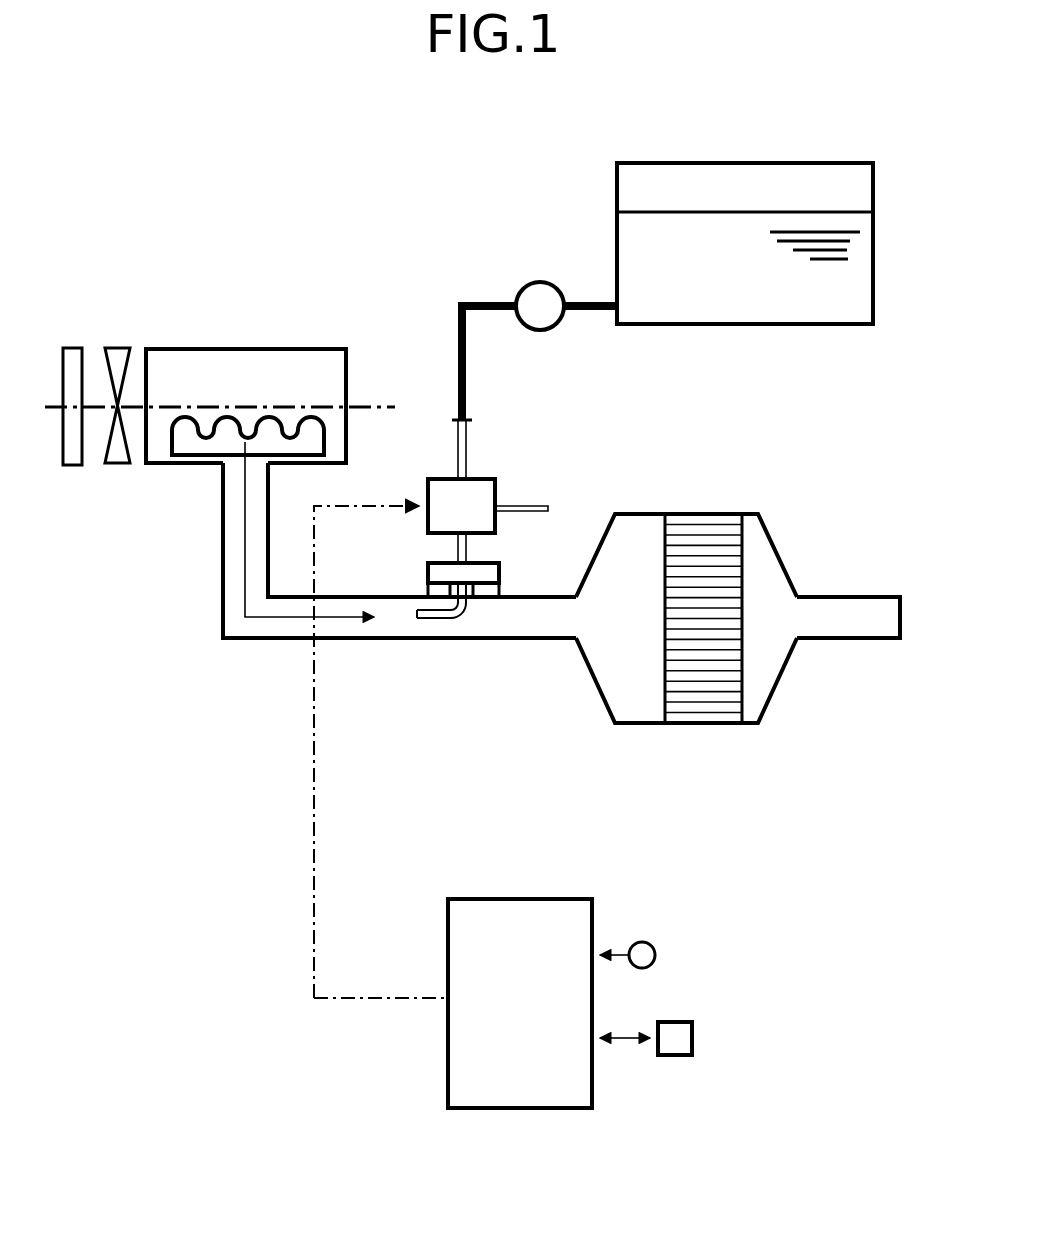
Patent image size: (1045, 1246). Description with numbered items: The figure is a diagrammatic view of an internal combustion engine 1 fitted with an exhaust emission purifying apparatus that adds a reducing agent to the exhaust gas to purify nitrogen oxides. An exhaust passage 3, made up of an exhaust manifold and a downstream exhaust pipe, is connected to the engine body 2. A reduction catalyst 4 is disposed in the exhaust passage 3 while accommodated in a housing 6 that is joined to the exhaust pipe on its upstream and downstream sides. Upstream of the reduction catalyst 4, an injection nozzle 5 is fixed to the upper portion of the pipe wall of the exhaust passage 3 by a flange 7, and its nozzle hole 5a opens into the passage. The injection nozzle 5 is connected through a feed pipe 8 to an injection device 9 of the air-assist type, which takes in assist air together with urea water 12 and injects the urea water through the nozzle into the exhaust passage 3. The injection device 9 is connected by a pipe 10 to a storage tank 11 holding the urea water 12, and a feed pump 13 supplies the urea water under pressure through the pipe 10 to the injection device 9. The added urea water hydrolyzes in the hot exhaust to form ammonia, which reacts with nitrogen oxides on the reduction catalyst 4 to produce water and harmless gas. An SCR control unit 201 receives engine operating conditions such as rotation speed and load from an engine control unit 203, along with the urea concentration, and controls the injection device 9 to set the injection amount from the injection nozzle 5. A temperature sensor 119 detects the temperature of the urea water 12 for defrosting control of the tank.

The internal combustion engine 1 is at (333, 289).
The engine body 2 is at (346, 445).
The exhaust passage 3 is at (338, 637).
The reduction catalyst 4 is at (727, 514).
The injection nozzle 5 is at (466, 606).
The nozzle hole 5a is at (415, 615).
The housing 6 is at (635, 723).
The flange 7 is at (490, 573).
The feed pipe 8 is at (458, 545).
The injection device 9 is at (495, 480).
The pipe 10 is at (457, 345).
The storage tank 11 is at (873, 180).
The urea water 12 is at (861, 272).
The feed pump 13 is at (548, 282).
The temperature sensor 119 is at (655, 950).
The SCR control unit 201 is at (448, 1092).
The engine control unit 203 is at (692, 1035).